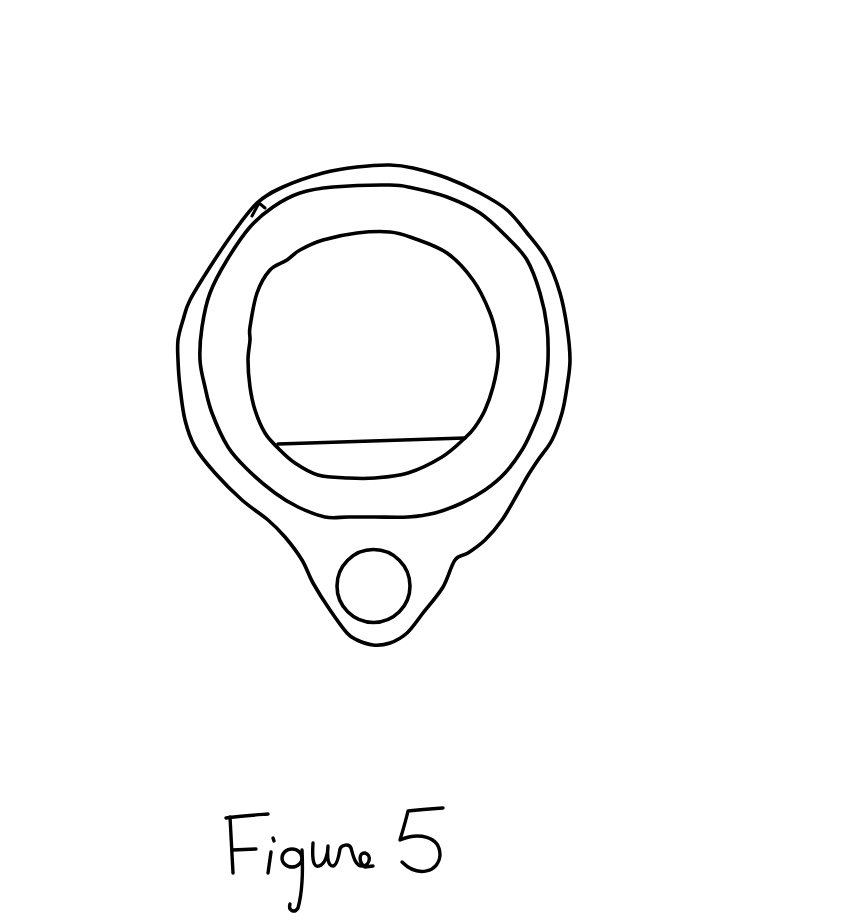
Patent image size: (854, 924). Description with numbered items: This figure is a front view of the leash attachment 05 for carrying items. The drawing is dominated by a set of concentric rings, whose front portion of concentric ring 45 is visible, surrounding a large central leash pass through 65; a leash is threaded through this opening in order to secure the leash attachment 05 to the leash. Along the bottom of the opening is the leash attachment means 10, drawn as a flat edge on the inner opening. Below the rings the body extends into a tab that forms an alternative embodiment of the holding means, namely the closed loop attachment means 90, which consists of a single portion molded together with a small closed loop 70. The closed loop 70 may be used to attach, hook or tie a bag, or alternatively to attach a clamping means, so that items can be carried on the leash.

The leash attachment 05 is at (157, 263).
The closed loop attachment means 90 is at (497, 218).
The front portion of concentric ring 45 is at (437, 223).
The leash pass through 65 is at (462, 352).
The leash attachment means 10 is at (425, 448).
The closed loop 70 is at (390, 598).